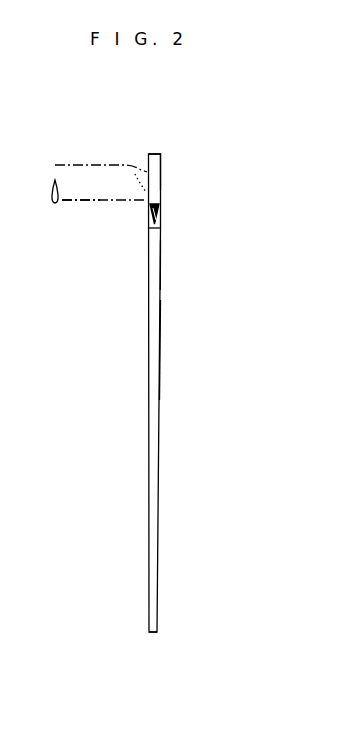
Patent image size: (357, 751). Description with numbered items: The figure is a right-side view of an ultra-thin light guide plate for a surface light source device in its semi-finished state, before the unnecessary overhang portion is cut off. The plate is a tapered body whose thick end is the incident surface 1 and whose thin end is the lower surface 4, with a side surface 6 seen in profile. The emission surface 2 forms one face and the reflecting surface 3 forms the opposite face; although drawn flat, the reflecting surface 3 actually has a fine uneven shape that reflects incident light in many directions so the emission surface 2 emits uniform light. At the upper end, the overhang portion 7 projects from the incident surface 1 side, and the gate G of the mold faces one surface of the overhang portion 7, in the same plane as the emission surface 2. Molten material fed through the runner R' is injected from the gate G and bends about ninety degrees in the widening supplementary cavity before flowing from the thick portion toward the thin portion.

The incident surface 1 is at (160, 208).
The emission surface 2 is at (148, 322).
The reflecting surface 3 is at (160, 347).
The lower surface 4 is at (152, 633).
The side surface 6 is at (160, 270).
The overhang portion 7 is at (160, 170).
The gate G is at (147, 173).
The ring member R' is at (81, 229).